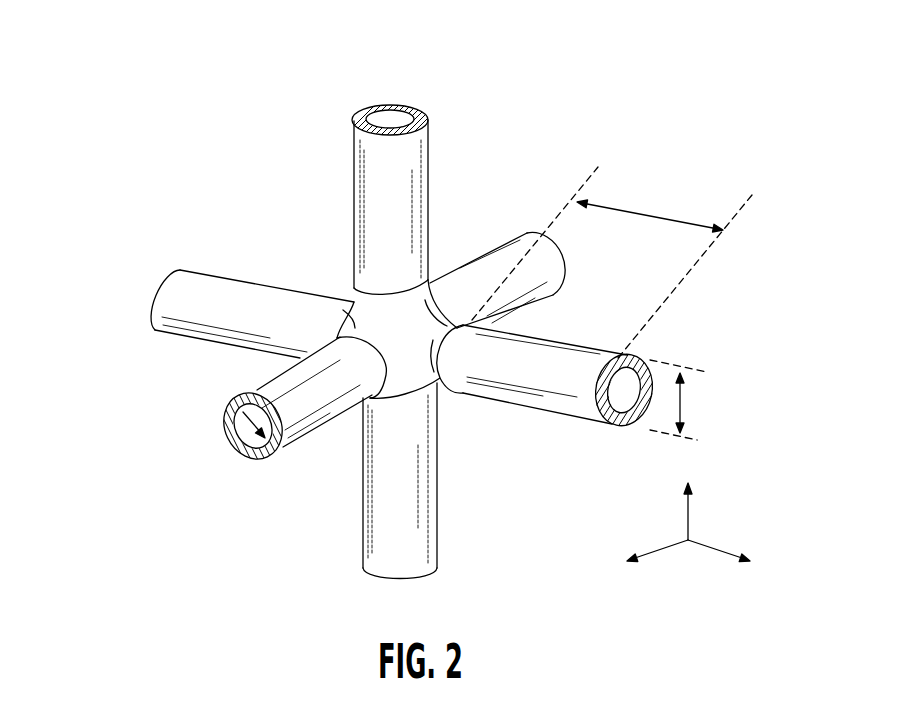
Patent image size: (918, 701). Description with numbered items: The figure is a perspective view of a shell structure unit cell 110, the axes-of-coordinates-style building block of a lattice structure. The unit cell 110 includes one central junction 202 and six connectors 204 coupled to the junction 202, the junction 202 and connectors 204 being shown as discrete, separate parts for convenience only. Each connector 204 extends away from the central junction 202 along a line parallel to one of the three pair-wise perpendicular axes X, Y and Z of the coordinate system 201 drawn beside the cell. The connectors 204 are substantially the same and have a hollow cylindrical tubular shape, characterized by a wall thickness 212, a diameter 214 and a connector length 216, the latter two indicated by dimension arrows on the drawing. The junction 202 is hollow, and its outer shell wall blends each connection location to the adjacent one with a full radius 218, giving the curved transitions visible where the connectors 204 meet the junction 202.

The shell structure unit cell 110 is at (413, 304).
The coordinate system 201 is at (717, 503).
The junction 202 is at (347, 317).
The connector 204 is at (352, 170).
The wall thickness 212 is at (303, 492).
The diameter 214 is at (680, 402).
The connector length 216 is at (647, 213).
The full radius 218 is at (448, 307).